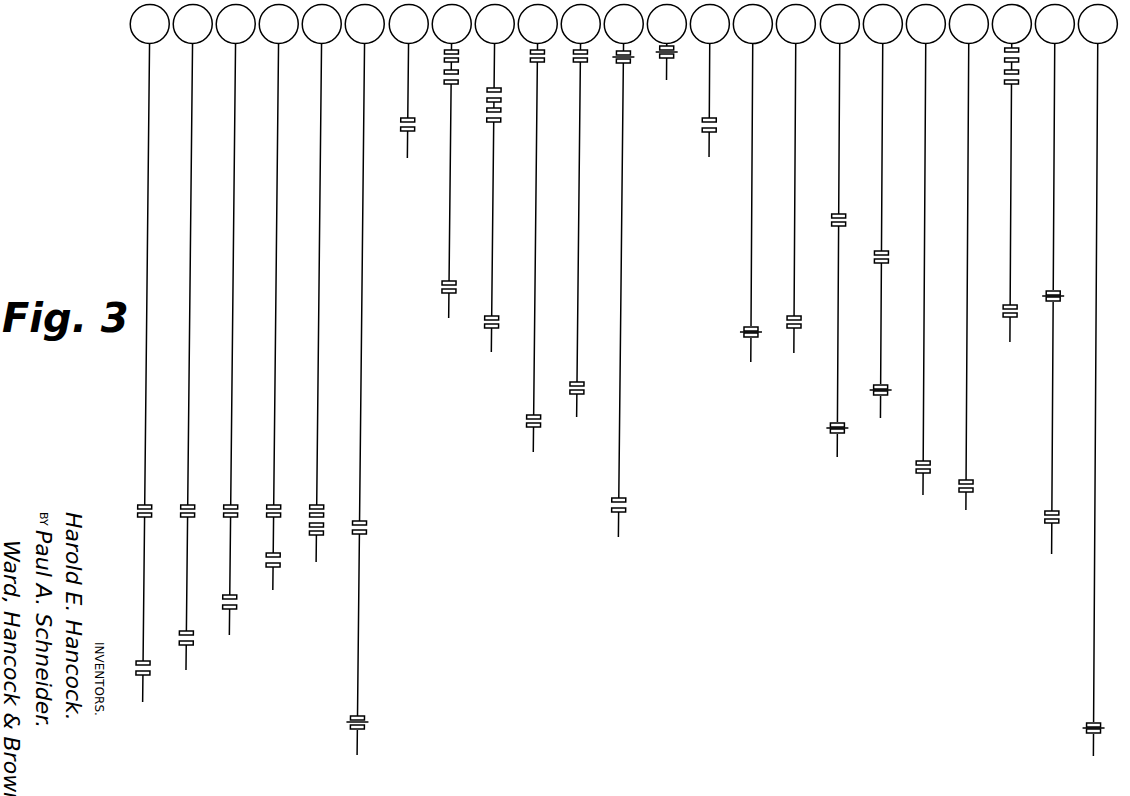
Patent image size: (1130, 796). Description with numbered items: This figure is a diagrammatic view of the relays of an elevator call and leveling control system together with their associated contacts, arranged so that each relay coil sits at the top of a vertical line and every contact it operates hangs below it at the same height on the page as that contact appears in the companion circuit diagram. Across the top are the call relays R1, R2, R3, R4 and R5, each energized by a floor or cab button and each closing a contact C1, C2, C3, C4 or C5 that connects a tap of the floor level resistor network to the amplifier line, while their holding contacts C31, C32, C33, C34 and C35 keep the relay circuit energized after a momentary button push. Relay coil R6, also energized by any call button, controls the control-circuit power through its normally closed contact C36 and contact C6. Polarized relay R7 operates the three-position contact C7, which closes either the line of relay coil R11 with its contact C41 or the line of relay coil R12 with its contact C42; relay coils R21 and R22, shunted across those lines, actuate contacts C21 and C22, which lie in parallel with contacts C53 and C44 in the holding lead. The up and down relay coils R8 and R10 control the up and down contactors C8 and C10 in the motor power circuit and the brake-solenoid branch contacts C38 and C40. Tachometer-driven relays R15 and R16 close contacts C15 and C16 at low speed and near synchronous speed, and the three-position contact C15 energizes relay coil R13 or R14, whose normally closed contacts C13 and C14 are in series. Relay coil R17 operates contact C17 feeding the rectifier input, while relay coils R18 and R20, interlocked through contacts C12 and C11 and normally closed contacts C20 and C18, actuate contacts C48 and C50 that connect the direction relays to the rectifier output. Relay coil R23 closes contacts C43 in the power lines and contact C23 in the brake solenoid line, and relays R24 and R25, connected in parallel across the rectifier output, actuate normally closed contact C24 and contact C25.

The relay R1 is at (146, 354).
The relay R2 is at (189, 338).
The relay R3 is at (233, 320).
The relay R4 is at (275, 298).
The relay R5 is at (319, 284).
The relay coil R6 is at (361, 380).
The polarized relay coil R7 is at (408, 82).
The up relay coil R8 is at (450, 162).
The down relay coil R10 is at (493, 179).
The relay coil R11 is at (536, 229).
The relay coil R12 is at (578, 211).
The relay coil R13 is at (621, 271).
The relay coil R14 is at (666, 43).
The relay coil R15 is at (710, 81).
The relay coil R16 is at (751, 184).
The relay coil R17 is at (794, 179).
The relay coil R18 is at (839, 231).
The relay coil R20 is at (882, 212).
The relay coil R21 is at (924, 250).
The relay R22 is at (967, 258).
The relay coil R23 is at (1010, 174).
The relay R24 is at (1053, 280).
The relay R25 is at (1096, 381).
The contact C1 is at (151, 661).
The contact C2 is at (195, 631).
The contact C3 is at (239, 595).
The contact C4 is at (282, 567).
The contact C5 is at (324, 536).
The contact C6 is at (372, 521).
The contact C7 is at (408, 118).
The up contactors C8 is at (457, 56).
The down contactors C10 is at (495, 88).
The contact C11 is at (537, 415).
The contact C12 is at (581, 382).
The normally closed contact C13 is at (626, 62).
The normally closed contact C14 is at (673, 57).
The contact C15 is at (712, 118).
The contact C16 is at (754, 326).
The contact C17 is at (796, 316).
The normally closed contact C18 is at (841, 422).
The normally closed contact C20 is at (883, 384).
The relay contact C21 is at (926, 460).
The relay contact C22 is at (969, 479).
The contact C23 is at (1013, 303).
The normally closed contact C24 is at (1057, 292).
The contact C25 is at (1098, 723).
The holding contact C31 is at (150, 505).
The holding contact C32 is at (193, 505).
The holding contact C33 is at (236, 505).
The holding contact C34 is at (279, 505).
The holding contact C35 is at (322, 505).
The normally closed contact C36 is at (368, 718).
The contact C38 is at (451, 281).
The contact C40 is at (493, 316).
The contact C41 is at (538, 62).
The contact C42 is at (582, 62).
The contacts C43 is at (1018, 60).
The relay contact C44 is at (1056, 511).
The contact C48 is at (841, 213).
The contact C50 is at (884, 251).
The relay contact C53 is at (627, 497).